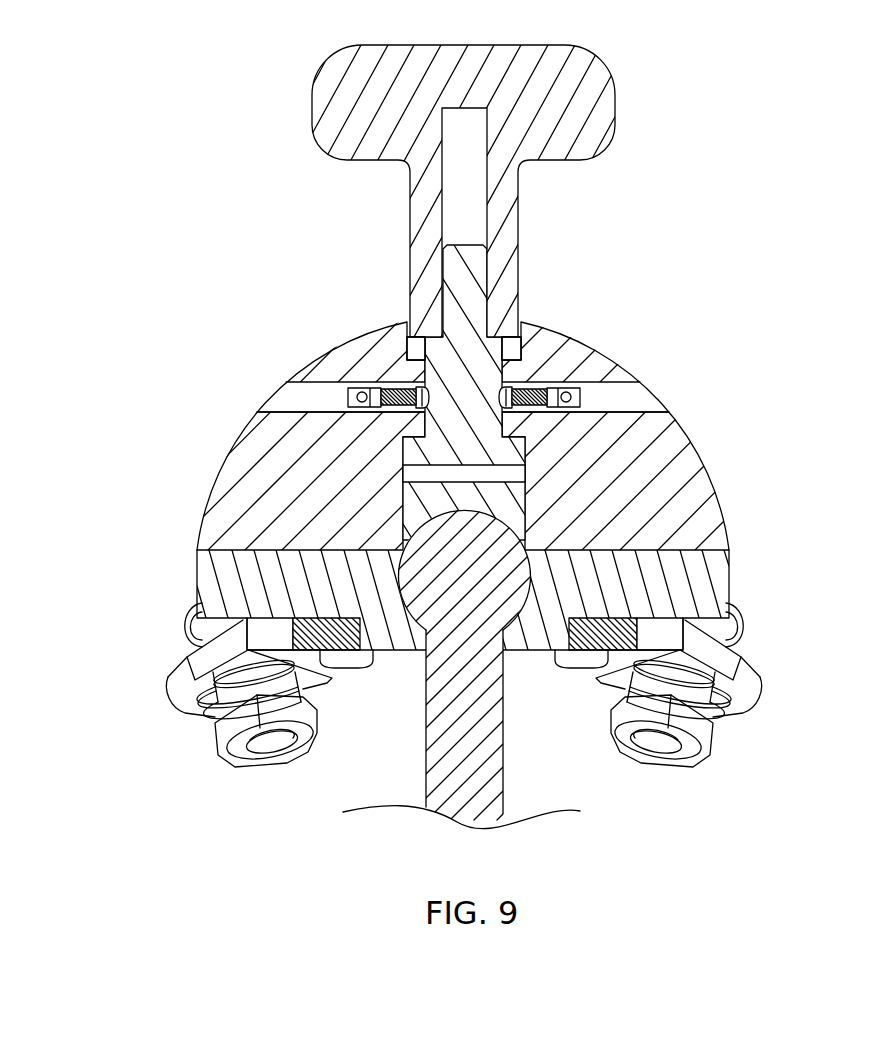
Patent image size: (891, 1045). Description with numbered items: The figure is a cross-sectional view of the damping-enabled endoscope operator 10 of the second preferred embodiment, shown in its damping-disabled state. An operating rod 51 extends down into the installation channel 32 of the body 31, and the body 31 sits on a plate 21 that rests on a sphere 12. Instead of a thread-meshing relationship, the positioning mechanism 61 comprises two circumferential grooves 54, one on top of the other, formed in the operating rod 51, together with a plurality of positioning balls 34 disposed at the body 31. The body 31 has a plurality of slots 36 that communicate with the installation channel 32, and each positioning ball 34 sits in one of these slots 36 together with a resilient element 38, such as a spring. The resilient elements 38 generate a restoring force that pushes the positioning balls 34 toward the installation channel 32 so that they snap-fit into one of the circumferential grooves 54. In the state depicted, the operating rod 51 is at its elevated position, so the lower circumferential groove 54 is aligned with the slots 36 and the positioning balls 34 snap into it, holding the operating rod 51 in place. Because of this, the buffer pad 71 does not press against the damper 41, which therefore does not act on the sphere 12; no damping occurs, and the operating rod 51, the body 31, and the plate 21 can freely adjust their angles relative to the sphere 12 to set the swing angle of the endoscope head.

The damping-enabled endoscope operator 10 is at (458, 447).
The operating rod 51 is at (458, 240).
The circumferential grooves 54 is at (465, 340).
The positioning balls 34 is at (548, 376).
The positioning mechanism 61 is at (627, 210).
The resilient element 38 is at (562, 385).
The slots 36 is at (608, 402).
The installation channel 32 is at (530, 427).
The body 31 is at (712, 480).
The buffer pad 71 is at (400, 472).
The damper 41 is at (400, 518).
The plate 21 is at (736, 582).
The sphere 12 is at (504, 650).